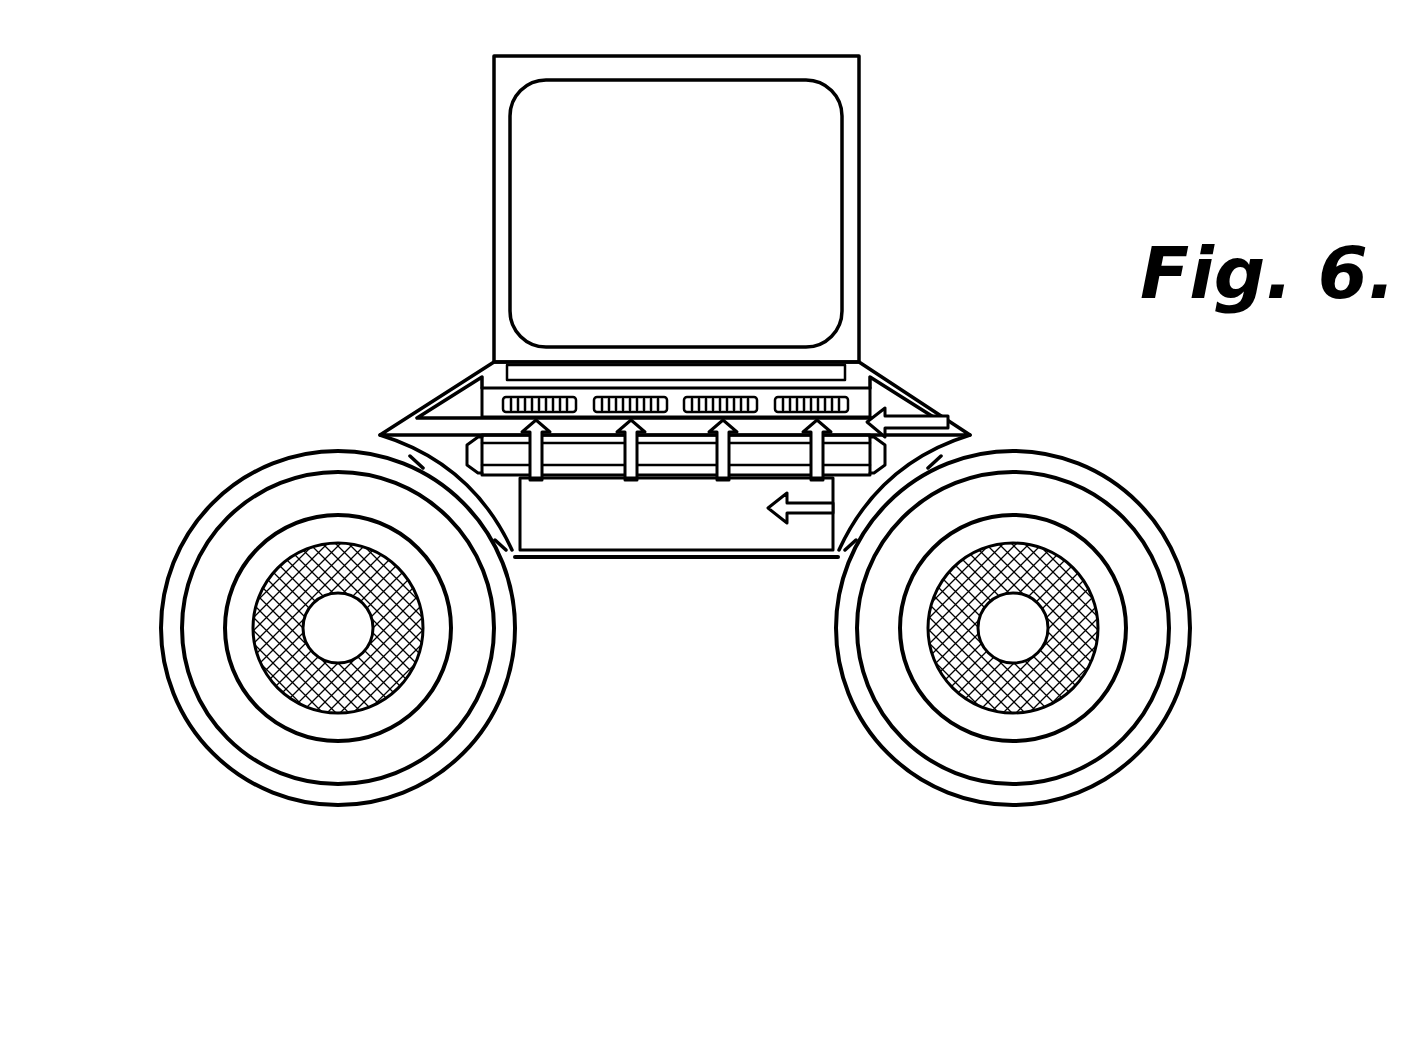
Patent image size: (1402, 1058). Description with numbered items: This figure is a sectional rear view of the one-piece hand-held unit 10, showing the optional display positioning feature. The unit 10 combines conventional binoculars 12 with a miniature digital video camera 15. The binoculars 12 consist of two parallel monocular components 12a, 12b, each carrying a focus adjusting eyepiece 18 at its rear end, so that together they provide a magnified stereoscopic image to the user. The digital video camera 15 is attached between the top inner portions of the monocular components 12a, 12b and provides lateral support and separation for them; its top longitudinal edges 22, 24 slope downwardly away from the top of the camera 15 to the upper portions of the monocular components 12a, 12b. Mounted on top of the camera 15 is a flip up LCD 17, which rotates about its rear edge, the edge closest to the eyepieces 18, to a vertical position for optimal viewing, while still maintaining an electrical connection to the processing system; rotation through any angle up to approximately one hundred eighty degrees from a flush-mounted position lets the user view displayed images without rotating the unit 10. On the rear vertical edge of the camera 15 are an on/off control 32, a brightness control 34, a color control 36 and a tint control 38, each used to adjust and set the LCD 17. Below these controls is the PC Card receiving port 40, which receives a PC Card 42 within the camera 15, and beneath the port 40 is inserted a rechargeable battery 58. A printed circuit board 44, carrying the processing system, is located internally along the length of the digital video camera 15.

The hand-held unit 10 is at (553, 783).
The binoculars 12 is at (228, 578).
The left monocular component 12a is at (242, 770).
The right monocular component 12b is at (1109, 770).
The digital video camera 15 is at (866, 360).
The flip up LCD 17 is at (528, 189).
The focus adjusting eyepieces 18 is at (190, 718).
The left top longitudinal edge 22 is at (473, 380).
The right top longitudinal edge 24 is at (883, 387).
The on/off control 32 is at (811, 450).
The brightness control 34 is at (717, 450).
The color control 36 is at (637, 450).
The tint control 38 is at (542, 450).
The PC Card receiving port 40 is at (466, 438).
The PC Card 42 is at (467, 452).
The printed circuit board 44 is at (927, 417).
The rechargeable battery 58 is at (777, 513).